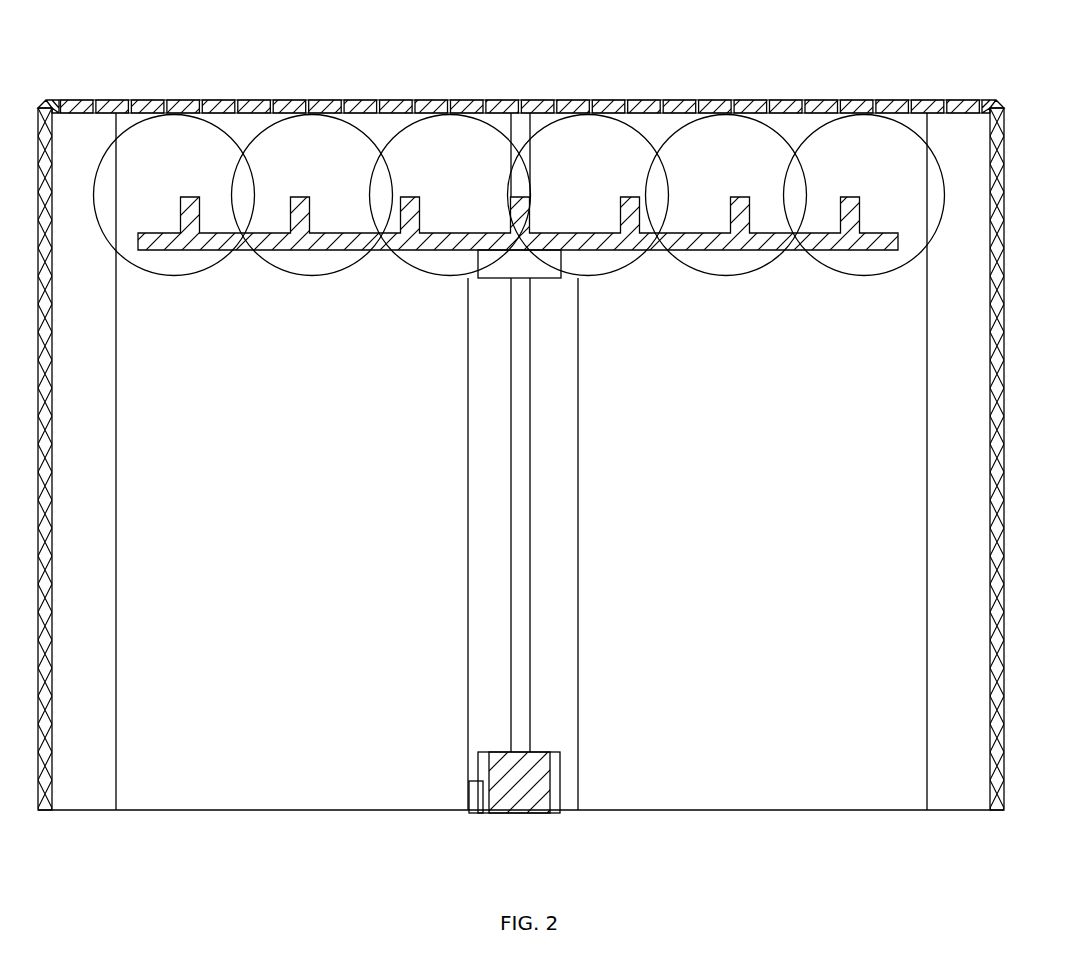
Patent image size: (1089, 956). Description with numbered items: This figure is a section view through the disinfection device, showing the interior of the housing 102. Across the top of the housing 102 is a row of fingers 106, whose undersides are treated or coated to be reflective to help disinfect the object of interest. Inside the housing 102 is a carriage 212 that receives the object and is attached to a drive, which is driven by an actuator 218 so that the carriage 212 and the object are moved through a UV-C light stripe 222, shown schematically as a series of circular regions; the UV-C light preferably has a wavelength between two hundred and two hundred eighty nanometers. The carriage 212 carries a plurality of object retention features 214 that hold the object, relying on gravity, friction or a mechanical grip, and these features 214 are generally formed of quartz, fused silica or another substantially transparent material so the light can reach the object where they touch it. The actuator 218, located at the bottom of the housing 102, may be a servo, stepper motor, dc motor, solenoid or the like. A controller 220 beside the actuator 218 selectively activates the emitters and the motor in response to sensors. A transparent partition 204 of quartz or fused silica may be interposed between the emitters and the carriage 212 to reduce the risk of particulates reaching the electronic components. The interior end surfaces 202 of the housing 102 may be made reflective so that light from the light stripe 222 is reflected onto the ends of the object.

The housing 102 is at (1005, 370).
The fingers 106 is at (442, 106).
The end surfaces 202 is at (50, 388).
The transparent partition 204 is at (340, 442).
The carriage 212 is at (652, 250).
The object retention features 214 is at (522, 510).
The actuator 218 is at (525, 803).
The controller 220 is at (476, 797).
The UV-C light stripe 222 is at (182, 267).